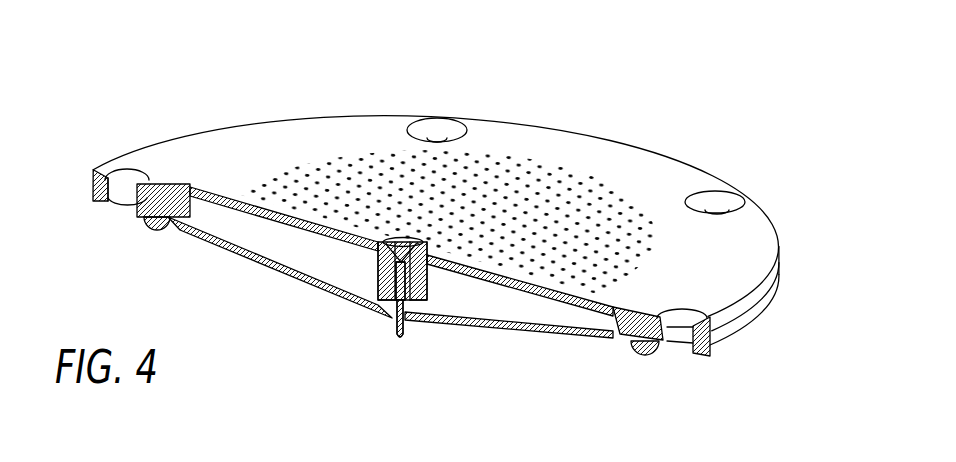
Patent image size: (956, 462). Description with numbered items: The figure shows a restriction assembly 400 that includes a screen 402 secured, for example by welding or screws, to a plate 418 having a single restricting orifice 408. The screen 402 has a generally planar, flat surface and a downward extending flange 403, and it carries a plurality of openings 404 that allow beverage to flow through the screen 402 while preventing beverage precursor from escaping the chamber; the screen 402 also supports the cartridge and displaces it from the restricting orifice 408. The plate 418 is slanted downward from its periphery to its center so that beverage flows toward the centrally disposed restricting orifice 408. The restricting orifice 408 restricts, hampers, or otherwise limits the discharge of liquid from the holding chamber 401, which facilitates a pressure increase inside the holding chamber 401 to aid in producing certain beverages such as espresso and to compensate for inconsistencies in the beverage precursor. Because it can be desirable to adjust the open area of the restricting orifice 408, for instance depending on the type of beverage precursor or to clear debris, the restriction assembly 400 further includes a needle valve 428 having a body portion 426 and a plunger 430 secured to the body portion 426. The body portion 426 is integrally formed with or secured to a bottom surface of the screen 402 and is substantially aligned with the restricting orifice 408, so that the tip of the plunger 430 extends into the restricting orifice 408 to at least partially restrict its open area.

The restriction assembly 400 is at (169, 91).
The screen 402 is at (563, 138).
The openings 404 is at (648, 185).
The downward extending flange 403 is at (143, 212).
The plate 418 is at (230, 245).
The needle valve 428 is at (347, 278).
The body portion 426 is at (428, 288).
The plunger 430 is at (378, 296).
The restricting orifice 408 is at (403, 340).
The holding chamber 401 is at (528, 312).